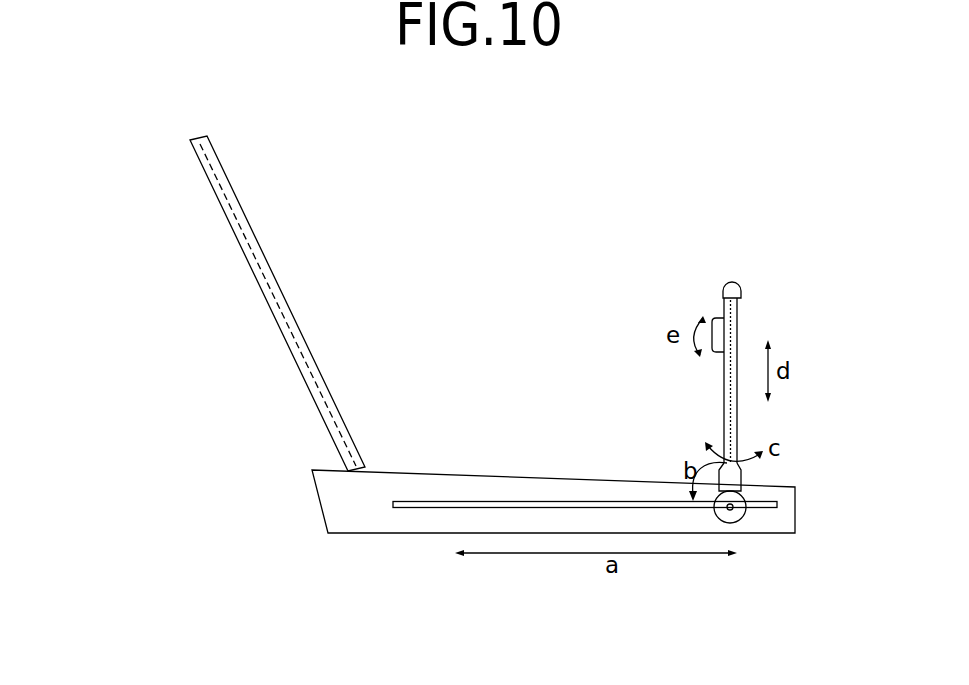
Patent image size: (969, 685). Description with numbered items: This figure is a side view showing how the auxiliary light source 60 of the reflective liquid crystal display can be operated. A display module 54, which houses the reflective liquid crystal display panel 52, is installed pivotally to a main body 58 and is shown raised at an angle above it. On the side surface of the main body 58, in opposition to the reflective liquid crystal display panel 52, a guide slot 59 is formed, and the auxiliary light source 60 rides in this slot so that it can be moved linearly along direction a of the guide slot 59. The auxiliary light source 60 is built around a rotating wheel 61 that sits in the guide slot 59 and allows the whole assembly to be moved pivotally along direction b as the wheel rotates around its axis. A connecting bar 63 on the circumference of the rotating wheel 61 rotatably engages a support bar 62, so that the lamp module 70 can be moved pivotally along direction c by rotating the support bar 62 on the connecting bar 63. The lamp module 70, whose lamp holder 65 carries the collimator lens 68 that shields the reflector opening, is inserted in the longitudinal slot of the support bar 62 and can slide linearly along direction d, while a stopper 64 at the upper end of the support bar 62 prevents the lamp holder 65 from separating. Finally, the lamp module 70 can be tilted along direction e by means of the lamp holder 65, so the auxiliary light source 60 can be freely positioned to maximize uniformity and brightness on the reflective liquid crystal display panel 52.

The reflective liquid crystal display panel 52 is at (218, 178).
The display module 54 is at (237, 240).
The main body 58 is at (795, 500).
The guide slot 59 is at (607, 507).
The auxiliary light source 60 is at (732, 252).
The rotating wheel 61 is at (738, 515).
The support bar 62 is at (737, 417).
The connecting bar 63 is at (737, 480).
The stopper 64 is at (738, 288).
The lamp holder 65 is at (722, 352).
The collimator lens 68 is at (703, 316).
The lamp module 70 is at (643, 330).